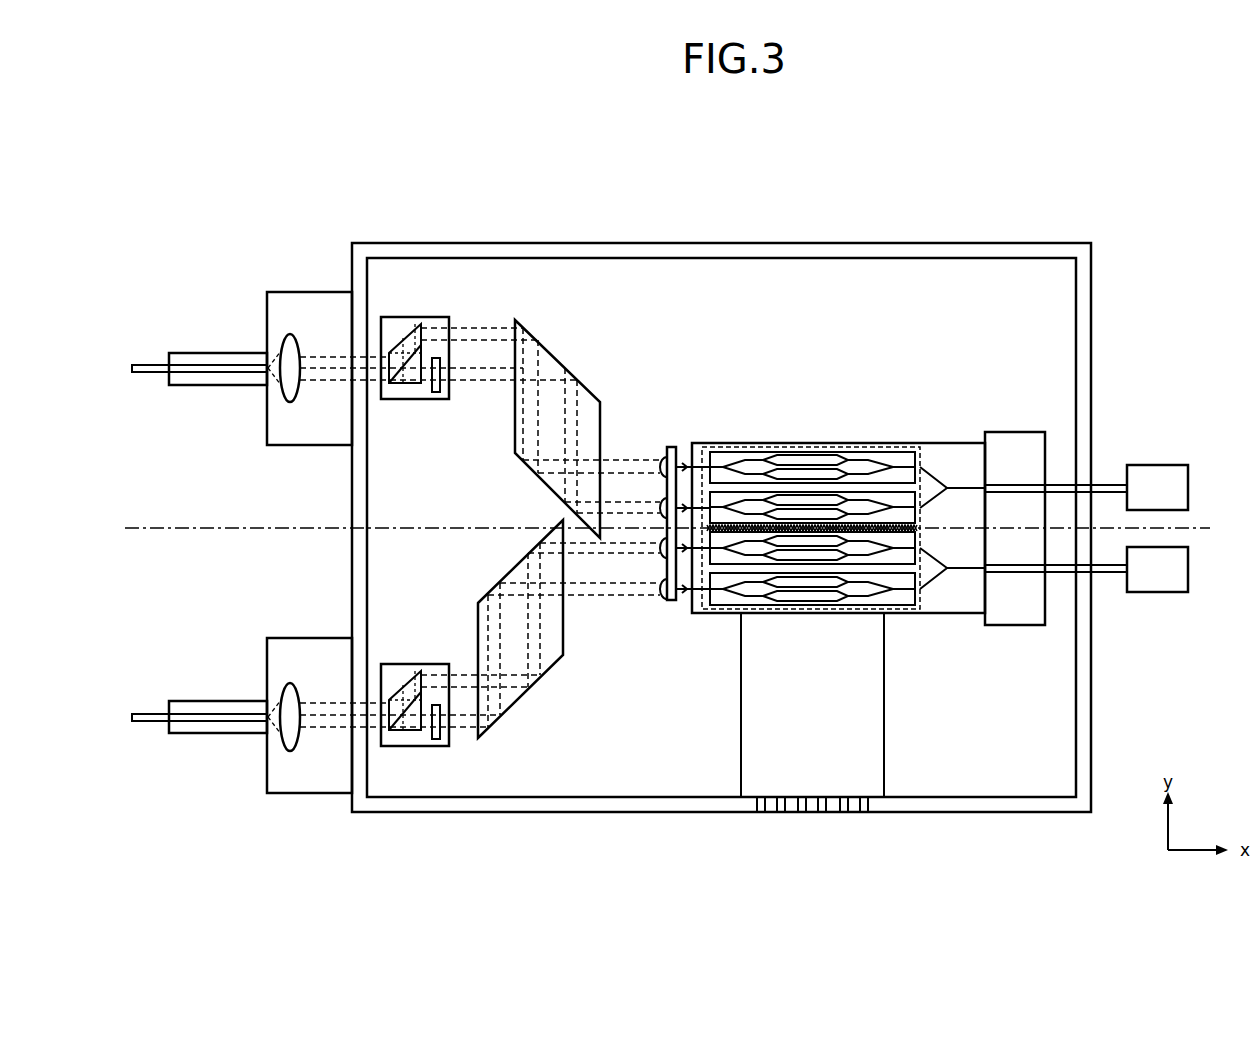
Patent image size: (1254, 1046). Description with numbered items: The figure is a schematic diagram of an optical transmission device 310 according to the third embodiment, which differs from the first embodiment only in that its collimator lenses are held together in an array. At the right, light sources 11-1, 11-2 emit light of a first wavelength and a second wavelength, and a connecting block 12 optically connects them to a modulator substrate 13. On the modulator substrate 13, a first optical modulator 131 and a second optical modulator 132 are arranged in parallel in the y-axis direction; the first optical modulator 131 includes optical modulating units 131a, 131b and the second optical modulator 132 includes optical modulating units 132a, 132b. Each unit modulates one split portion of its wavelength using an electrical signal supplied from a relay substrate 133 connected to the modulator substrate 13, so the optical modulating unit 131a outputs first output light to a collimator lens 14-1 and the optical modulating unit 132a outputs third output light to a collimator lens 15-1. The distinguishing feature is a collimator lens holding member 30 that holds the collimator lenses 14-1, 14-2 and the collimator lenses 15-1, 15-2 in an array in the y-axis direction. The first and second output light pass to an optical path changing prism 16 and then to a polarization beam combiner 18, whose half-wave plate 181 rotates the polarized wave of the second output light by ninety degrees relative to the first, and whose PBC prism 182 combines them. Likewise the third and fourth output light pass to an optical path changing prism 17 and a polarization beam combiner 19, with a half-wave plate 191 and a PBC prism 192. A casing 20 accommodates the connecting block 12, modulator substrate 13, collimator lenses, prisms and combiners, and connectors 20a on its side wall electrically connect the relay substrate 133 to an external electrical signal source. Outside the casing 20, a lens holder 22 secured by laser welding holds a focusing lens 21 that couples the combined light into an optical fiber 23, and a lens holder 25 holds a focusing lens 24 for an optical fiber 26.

The optical transmission device 310 is at (742, 178).
The casing 20 is at (906, 243).
The connectors 20a is at (843, 814).
The lens holder 22 is at (310, 292).
The focusing lens 21 is at (282, 348).
The optical fiber 23 is at (177, 353).
The polarization beam combiner 18 is at (433, 317).
The PBC prism 182 is at (404, 384).
The half-wave plate 181 is at (436, 393).
The optical path changing prism 16 is at (553, 357).
The collimator lens holding member 30 is at (657, 520).
The collimator lens 14-1 is at (660, 465).
The collimator lens 14-2 is at (660, 506).
The collimator lens 15-1 is at (660, 550).
The collimator lens 15-2 is at (660, 591).
The optical path changing prism 17 is at (511, 572).
The polarization beam combiner 19 is at (433, 664).
The PBC prism 192 is at (404, 731).
The half-wave plate 191 is at (436, 740).
The focusing lens 24 is at (282, 738).
The lens holder 25 is at (310, 793).
The optical fiber 26 is at (177, 733).
The modulator substrate 13 is at (905, 443).
The first optical modulator 131 is at (847, 471).
The optical modulating unit 131a is at (920, 466).
The optical modulating unit 131b is at (920, 520).
The second optical modulator 132 is at (847, 588).
The optical modulating unit 132a is at (920, 545).
The optical modulating unit 132b is at (920, 602).
The relay substrate 133 is at (884, 710).
The connecting block 12 is at (1020, 432).
The light source 11-1 is at (1189, 488).
The light source 11-2 is at (1189, 571).